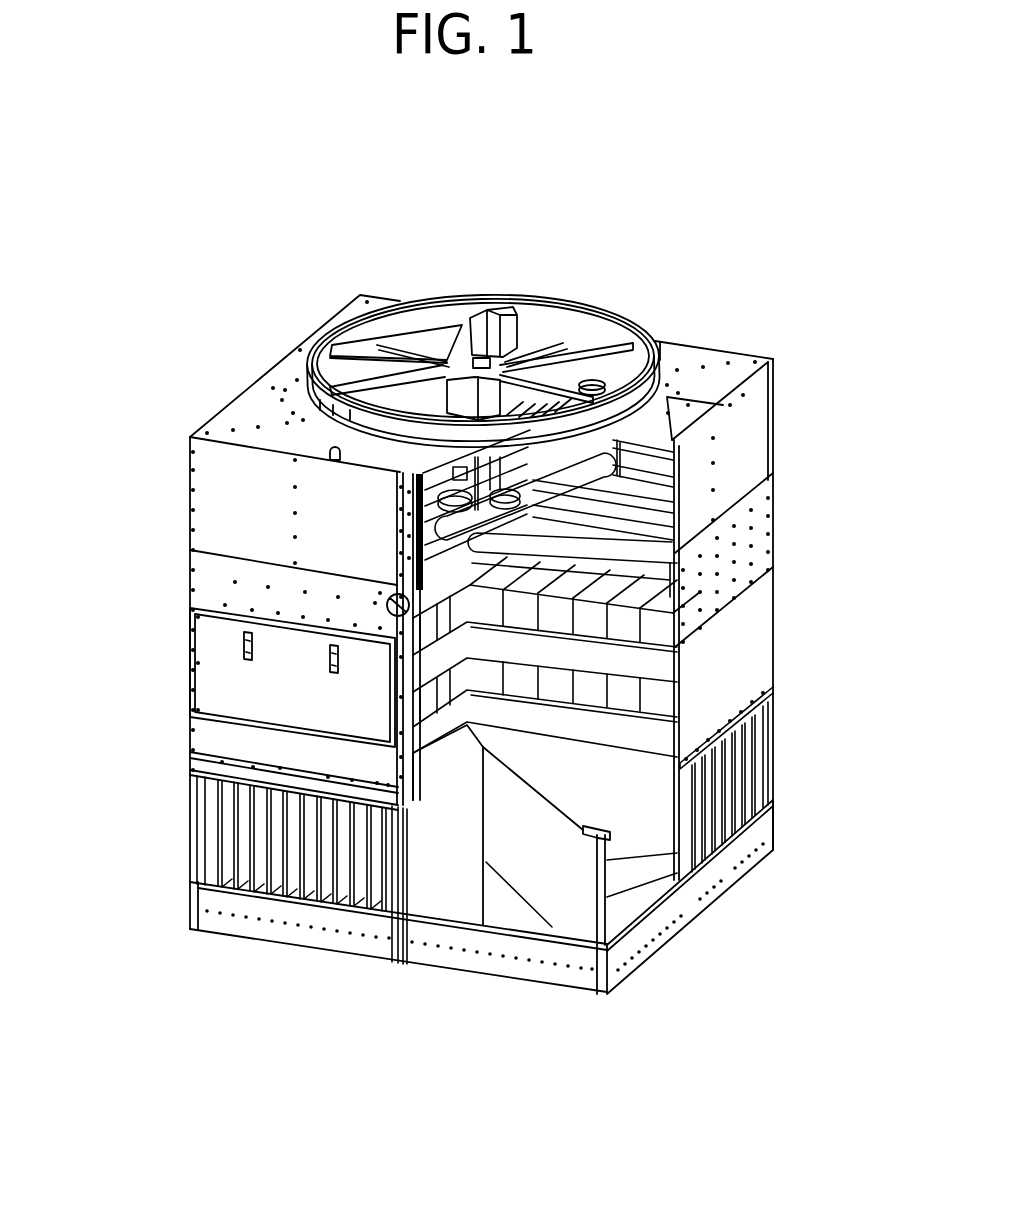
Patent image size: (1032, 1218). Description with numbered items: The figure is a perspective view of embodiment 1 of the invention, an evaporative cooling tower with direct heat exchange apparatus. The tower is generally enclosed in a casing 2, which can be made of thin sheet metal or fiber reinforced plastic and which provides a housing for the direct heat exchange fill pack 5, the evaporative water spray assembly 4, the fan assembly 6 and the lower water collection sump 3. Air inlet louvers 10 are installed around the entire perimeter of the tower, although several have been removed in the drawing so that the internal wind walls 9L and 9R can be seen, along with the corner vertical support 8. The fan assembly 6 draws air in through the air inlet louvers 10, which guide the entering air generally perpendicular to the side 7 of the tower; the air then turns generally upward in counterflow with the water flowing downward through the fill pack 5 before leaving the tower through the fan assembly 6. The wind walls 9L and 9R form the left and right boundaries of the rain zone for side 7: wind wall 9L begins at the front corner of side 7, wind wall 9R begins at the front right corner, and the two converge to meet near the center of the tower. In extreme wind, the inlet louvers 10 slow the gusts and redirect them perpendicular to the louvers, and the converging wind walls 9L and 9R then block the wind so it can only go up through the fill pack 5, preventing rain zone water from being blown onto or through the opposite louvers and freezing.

The embodiment 1 is at (168, 393).
The casing 2 is at (188, 548).
The lower water collection sump 3 is at (628, 908).
The evaporative water spray assembly 4 is at (612, 582).
The direct heat exchange fill pack 5 is at (632, 682).
The fan assembly 6 is at (486, 322).
The side 7 is at (227, 937).
The corner vertical support 8 is at (608, 905).
The left wind wall 9L is at (428, 823).
The right wind wall 9R is at (556, 876).
The air inlet louvers 10 is at (223, 825).